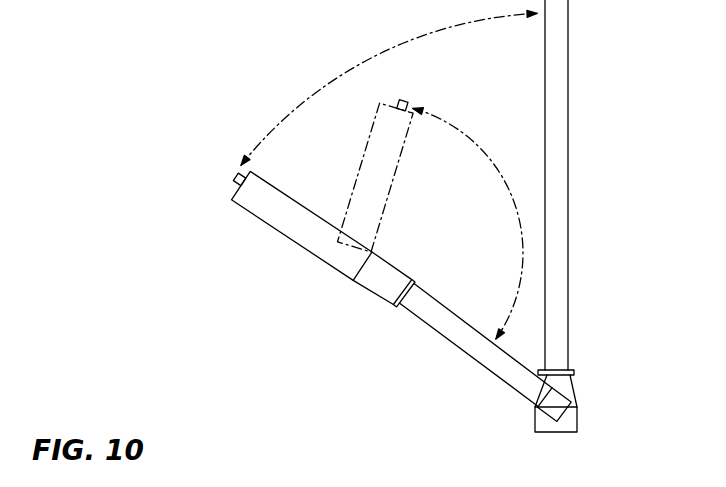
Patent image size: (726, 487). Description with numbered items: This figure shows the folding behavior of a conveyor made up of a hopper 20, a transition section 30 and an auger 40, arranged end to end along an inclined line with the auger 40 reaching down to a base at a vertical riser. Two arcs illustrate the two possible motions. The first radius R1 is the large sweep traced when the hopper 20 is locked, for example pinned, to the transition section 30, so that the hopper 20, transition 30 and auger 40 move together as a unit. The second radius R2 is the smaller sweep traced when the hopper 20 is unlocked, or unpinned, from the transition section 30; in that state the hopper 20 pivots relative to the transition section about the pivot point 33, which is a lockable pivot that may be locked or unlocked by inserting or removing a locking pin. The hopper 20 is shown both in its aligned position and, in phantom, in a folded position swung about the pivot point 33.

The hopper 20 is at (363, 143).
The pivot point 33 is at (370, 253).
The transition section 30 is at (365, 288).
The auger 40 is at (440, 335).
The first radius R1 is at (343, 77).
The second radius R2 is at (502, 171).